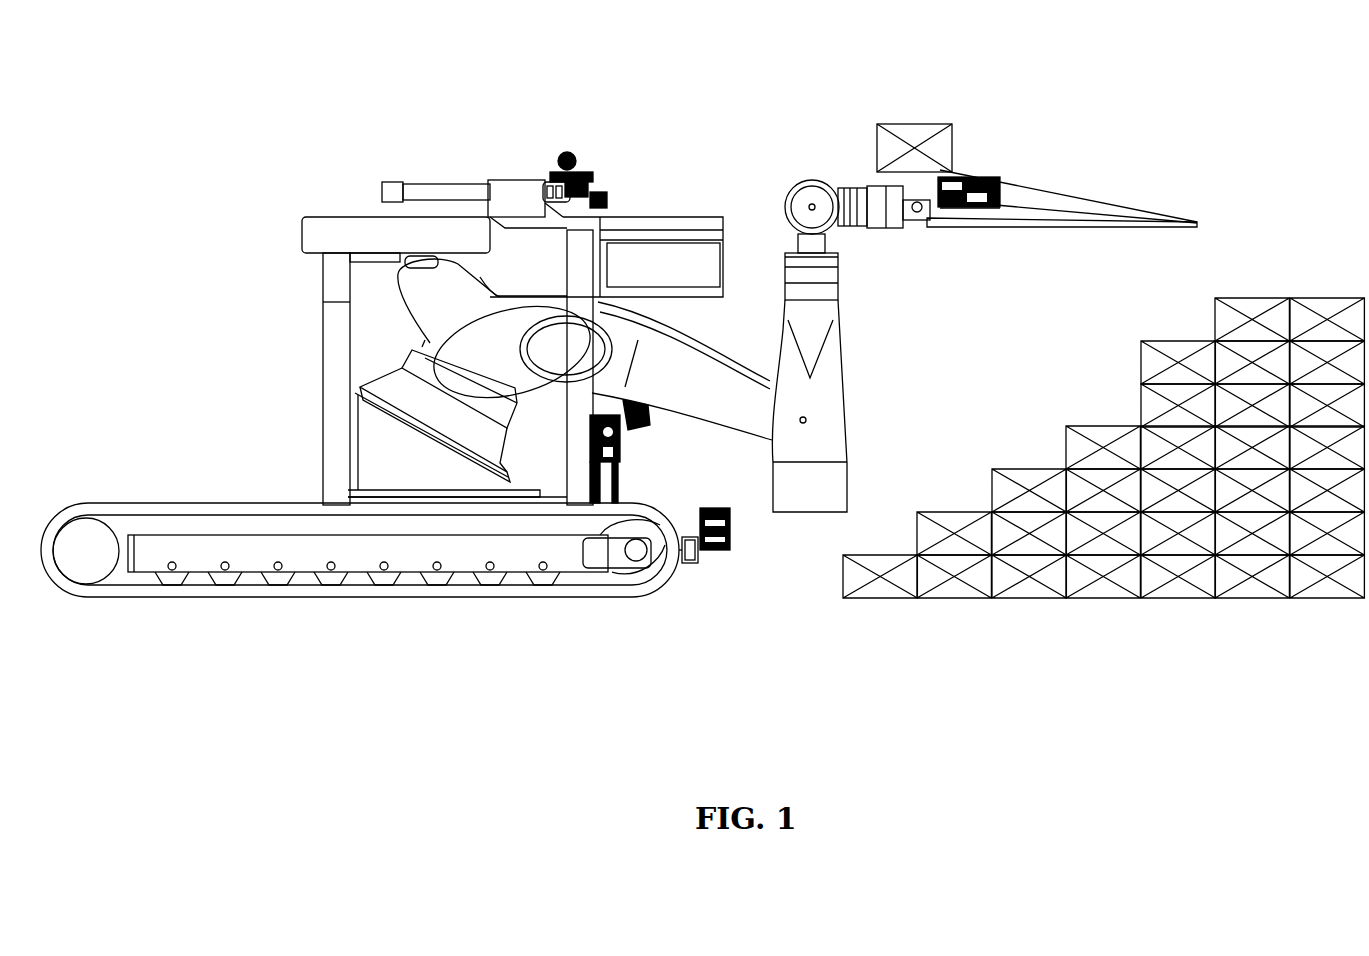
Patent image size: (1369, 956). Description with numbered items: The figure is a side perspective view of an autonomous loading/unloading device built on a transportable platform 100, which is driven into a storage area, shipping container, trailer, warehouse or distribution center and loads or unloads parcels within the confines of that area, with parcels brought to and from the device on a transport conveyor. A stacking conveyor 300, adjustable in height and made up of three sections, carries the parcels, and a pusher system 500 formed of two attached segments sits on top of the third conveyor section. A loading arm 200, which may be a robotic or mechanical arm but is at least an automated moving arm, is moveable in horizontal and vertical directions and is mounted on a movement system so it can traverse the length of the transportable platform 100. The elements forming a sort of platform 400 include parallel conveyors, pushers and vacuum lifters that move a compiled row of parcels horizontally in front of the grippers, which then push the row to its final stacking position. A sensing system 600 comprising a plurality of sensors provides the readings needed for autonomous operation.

The transportable platform 100 is at (262, 508).
The loading arm 200 is at (395, 457).
The stacking conveyor 300 is at (690, 222).
The platform 400 is at (1047, 200).
The pusher system 500 is at (545, 183).
The sensing system 600 is at (598, 500).